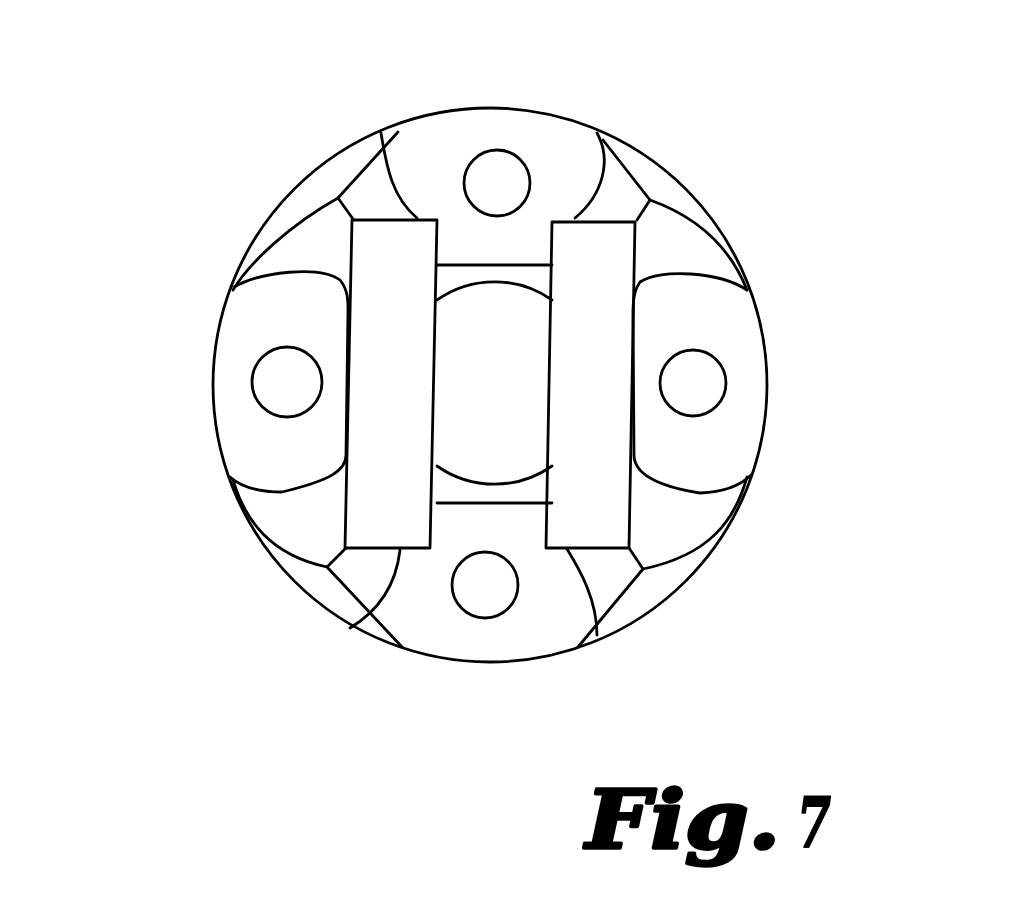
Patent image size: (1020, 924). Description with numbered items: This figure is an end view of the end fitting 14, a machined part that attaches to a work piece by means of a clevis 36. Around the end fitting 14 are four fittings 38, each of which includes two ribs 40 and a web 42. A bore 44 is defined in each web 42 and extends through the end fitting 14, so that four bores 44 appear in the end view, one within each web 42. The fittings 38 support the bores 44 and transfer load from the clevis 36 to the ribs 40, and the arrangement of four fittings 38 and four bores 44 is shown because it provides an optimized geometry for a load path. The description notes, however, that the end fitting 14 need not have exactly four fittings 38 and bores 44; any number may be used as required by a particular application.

The end fitting 14 is at (705, 72).
The clevis 36 is at (283, 570).
The fitting 38 is at (497, 107).
The rib 40 is at (374, 183).
The web 42 is at (247, 330).
The bore 44 is at (497, 183).